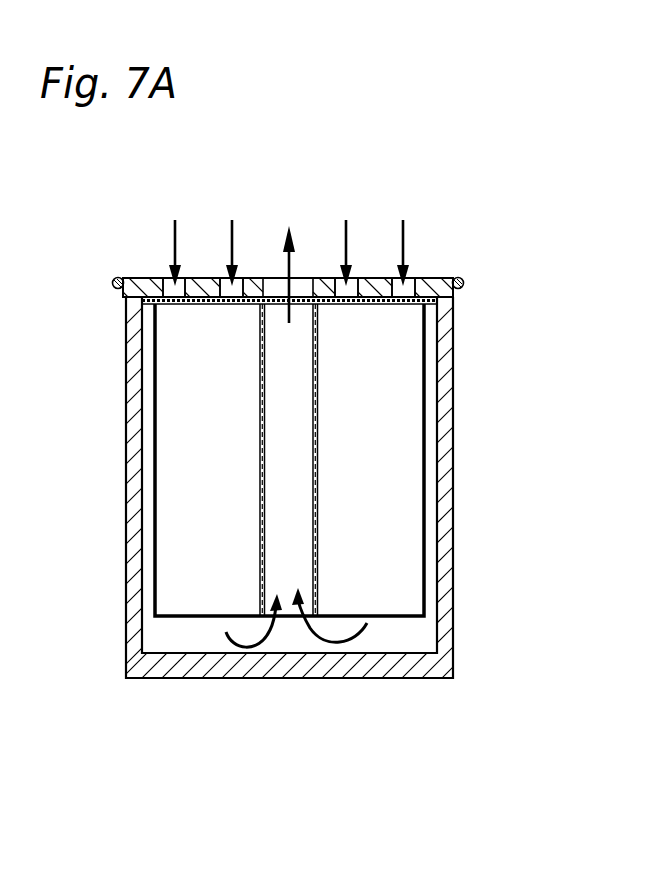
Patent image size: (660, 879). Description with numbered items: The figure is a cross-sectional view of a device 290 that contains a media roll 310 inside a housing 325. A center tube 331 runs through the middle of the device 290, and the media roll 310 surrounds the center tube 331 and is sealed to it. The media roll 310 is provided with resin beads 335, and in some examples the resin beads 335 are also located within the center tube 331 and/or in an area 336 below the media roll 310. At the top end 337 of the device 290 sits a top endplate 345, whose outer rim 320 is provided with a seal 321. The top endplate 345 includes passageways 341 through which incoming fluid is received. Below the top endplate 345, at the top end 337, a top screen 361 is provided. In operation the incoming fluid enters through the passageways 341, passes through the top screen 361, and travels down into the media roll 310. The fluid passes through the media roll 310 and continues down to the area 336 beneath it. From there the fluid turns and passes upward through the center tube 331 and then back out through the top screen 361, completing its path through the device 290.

The device 290 is at (522, 374).
The media roll 310 is at (393, 459).
The outer rim 320 is at (125, 293).
The seal 321 is at (118, 278).
The housing 325 is at (125, 570).
The center tube 331 is at (312, 380).
The resin beads 335 is at (340, 630).
The area below the media roll 336 is at (395, 637).
The top end 337 is at (440, 279).
The passageways 341 is at (167, 281).
The top endplate 345 is at (367, 277).
The top screen 361 is at (273, 303).